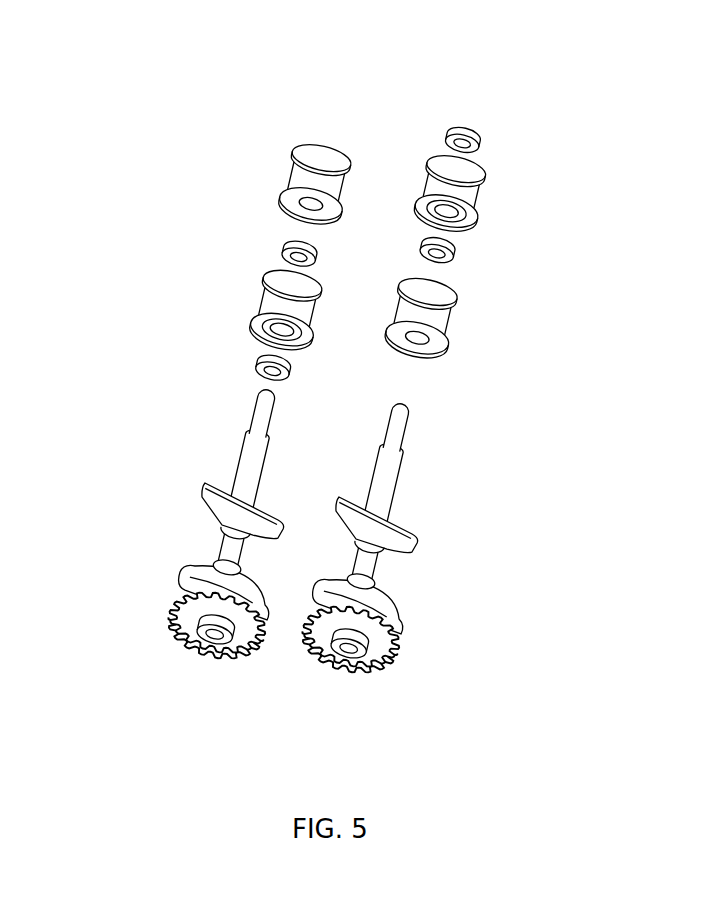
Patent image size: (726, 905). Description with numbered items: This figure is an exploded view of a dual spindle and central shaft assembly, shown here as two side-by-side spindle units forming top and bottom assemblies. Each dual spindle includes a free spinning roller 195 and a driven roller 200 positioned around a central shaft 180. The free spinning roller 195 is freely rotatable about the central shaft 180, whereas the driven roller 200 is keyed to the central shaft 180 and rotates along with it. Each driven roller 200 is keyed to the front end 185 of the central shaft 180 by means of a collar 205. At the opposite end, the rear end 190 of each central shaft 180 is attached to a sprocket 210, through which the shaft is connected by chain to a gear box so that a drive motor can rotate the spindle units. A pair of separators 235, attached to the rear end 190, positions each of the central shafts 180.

The central shaft 180 is at (248, 402).
The front end of the central shaft 185 is at (403, 422).
The rear end of the central shaft 190 is at (370, 565).
The free spinning roller 195 is at (445, 177).
The driven roller 200 is at (242, 335).
The collar 205 is at (473, 133).
The sprocket 210 is at (322, 645).
The separators 235 is at (222, 513).